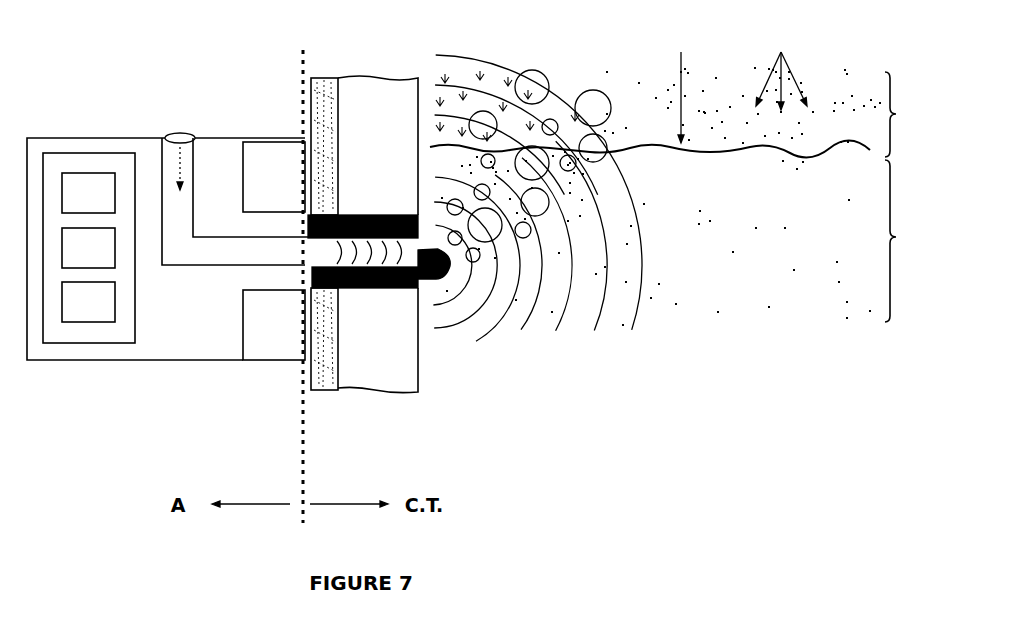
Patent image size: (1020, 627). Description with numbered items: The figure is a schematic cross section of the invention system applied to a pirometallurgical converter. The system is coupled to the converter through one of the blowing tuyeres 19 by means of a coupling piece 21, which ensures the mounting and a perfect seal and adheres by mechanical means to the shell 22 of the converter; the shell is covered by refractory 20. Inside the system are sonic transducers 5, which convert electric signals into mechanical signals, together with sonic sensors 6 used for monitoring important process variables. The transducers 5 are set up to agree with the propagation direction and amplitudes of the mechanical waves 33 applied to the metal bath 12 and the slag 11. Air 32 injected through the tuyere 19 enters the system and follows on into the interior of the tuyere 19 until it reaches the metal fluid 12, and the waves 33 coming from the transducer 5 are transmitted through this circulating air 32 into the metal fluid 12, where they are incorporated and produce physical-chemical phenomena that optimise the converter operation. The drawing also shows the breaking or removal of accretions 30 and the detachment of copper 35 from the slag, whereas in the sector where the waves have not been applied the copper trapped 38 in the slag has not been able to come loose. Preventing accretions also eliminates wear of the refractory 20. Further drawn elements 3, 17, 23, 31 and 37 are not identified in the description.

The control unit 3 is at (88, 193).
The sonic transducers 5 is at (88, 248).
The sonic sensors 6 is at (88, 302).
The slag 11 is at (674, 134).
The metal bath 12 is at (686, 243).
The tool housing 17 is at (194, 136).
The blowing tuyere 19 is at (306, 226).
The refractory 20 is at (379, 58).
The coupling piece 21 is at (274, 177).
The shell 22 is at (322, 58).
The lower tool module 23 is at (274, 325).
The accretions 30 is at (442, 278).
The gas bubble 31 is at (493, 229).
The air 32 is at (180, 147).
The mechanical waves 33 is at (497, 306).
The detachment of copper from the slag 35 is at (457, 73).
The fluid flow 37 is at (682, 90).
The copper trapped in the slag 38 is at (781, 72).